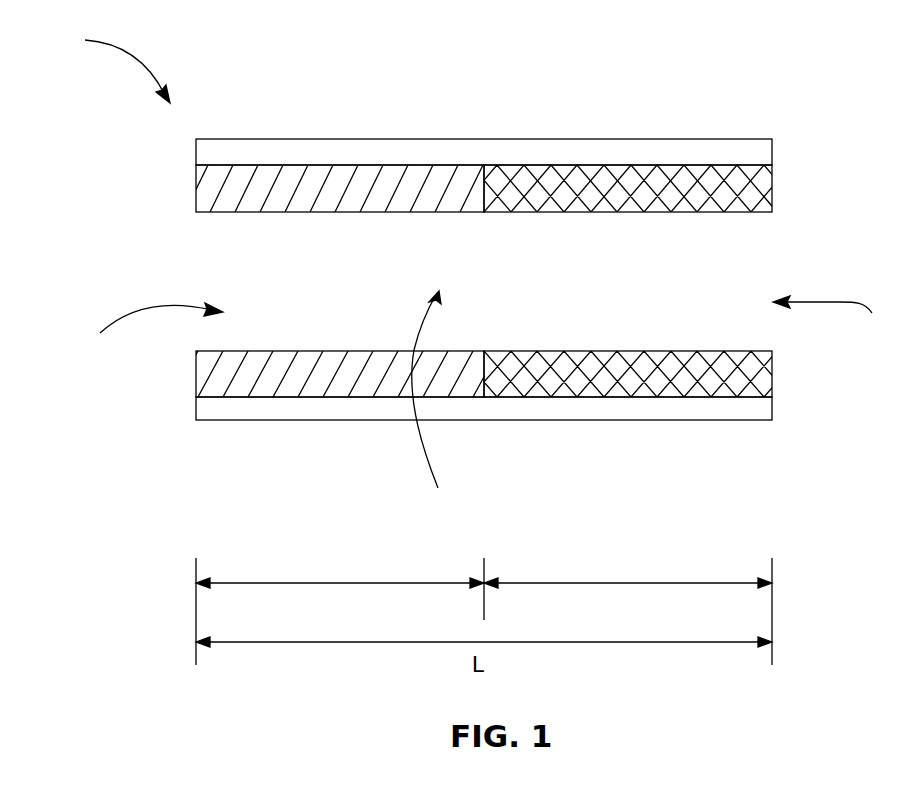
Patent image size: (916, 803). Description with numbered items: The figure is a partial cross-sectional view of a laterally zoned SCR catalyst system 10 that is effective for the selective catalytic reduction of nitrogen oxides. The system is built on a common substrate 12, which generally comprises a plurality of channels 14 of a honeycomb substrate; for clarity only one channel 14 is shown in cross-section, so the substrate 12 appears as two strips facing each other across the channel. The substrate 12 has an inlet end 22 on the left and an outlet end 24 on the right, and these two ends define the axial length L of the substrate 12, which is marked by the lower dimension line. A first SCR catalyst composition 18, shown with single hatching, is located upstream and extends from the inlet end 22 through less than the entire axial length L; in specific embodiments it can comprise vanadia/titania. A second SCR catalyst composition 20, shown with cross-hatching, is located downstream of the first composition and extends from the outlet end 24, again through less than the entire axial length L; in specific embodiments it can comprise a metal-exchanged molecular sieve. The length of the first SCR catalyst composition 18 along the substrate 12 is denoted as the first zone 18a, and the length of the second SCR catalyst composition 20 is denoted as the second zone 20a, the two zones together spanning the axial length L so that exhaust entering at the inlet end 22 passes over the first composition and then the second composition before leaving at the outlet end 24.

The SCR catalyst system 10 is at (103, 65).
The substrate 12 is at (760, 161).
The channels 14 is at (437, 404).
The first SCR catalyst composition 18 is at (335, 178).
The second SCR catalyst composition 20 is at (677, 177).
The inlet end 22 is at (144, 334).
The outlet end 24 is at (844, 317).
The first zone 18a is at (340, 611).
The second zone 20a is at (628, 611).